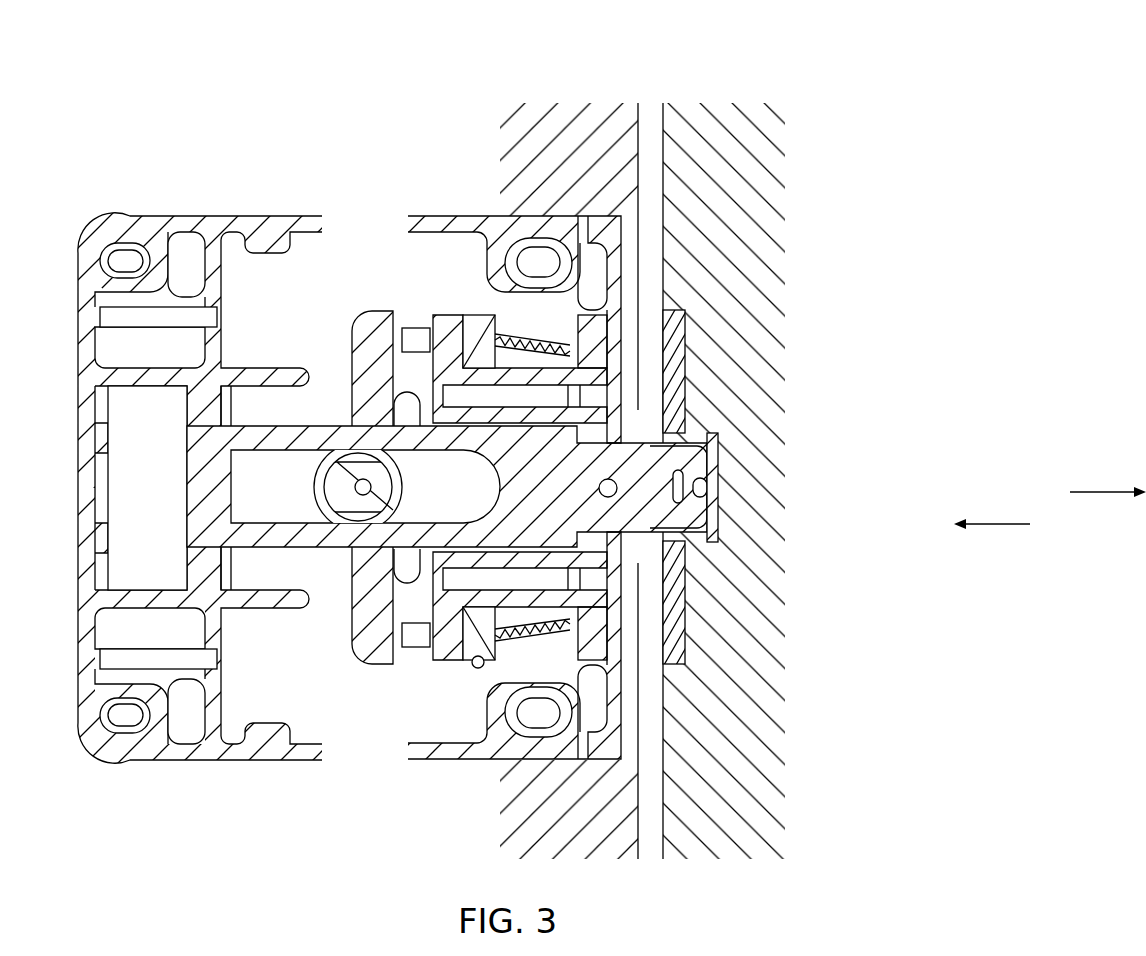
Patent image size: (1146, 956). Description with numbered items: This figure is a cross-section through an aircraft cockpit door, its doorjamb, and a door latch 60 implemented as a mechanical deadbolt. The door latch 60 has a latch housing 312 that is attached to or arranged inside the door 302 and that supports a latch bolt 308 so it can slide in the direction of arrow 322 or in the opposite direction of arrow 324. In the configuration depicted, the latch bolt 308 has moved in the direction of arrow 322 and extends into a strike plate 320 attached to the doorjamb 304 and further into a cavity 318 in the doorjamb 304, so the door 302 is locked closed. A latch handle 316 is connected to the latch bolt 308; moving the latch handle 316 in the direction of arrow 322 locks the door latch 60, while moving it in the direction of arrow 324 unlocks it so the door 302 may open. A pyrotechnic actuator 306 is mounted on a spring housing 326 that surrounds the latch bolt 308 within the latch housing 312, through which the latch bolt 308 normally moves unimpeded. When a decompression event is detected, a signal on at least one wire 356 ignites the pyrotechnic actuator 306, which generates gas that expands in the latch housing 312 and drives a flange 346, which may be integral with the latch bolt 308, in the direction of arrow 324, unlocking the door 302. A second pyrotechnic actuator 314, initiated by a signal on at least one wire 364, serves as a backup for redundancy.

The door latch 60 is at (243, 157).
The door 302 is at (562, 120).
The doorjamb 304 is at (697, 120).
The pyrotechnic actuator 306 is at (485, 329).
The latch bolt 308 is at (677, 447).
The latch housing 312 is at (152, 760).
The pyrotechnic actuator 314 is at (478, 663).
The latch handle 316 is at (366, 468).
The cavity 318 is at (707, 533).
The strike plate 320 is at (673, 370).
The arrow 322 is at (1091, 492).
The arrow 324 is at (1011, 524).
The spring housing 326 is at (437, 665).
The flange 346 is at (354, 312).
The wire 356 is at (521, 340).
The wire 364 is at (540, 627).